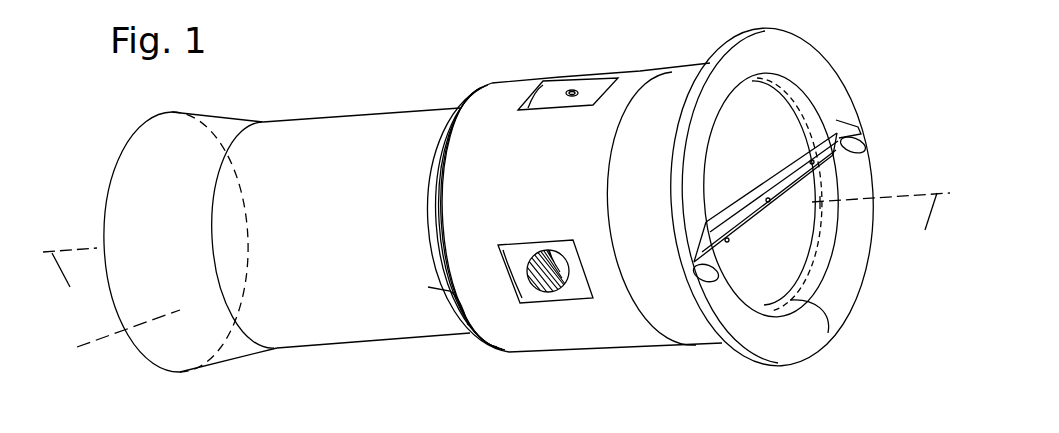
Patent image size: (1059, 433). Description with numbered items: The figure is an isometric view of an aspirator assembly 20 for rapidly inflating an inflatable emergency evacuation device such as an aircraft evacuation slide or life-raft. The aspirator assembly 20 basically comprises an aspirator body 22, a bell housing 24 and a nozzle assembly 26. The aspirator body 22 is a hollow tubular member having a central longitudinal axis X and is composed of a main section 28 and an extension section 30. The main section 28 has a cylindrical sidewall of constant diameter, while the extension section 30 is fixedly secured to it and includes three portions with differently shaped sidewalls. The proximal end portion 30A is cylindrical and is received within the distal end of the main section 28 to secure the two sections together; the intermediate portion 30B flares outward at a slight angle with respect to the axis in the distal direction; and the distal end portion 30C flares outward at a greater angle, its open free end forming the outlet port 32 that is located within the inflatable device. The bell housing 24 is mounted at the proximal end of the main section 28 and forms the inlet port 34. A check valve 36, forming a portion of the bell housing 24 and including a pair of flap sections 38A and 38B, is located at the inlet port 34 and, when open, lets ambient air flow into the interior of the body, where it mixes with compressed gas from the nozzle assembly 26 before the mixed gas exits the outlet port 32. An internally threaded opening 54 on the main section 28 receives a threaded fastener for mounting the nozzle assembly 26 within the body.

The aspirator assembly 20 is at (378, 58).
The aspirator body 22 is at (418, 107).
The bell housing 24 is at (817, 75).
The nozzle assembly 26 is at (548, 260).
The main section 28 is at (568, 337).
The extension section 30 is at (320, 160).
The proximal end portion 30A is at (468, 327).
The intermediate portion 30B is at (378, 325).
The distal end portion 30C is at (230, 345).
The outlet port 32 is at (114, 333).
The inlet port 34 is at (792, 300).
The check valve 36 is at (780, 210).
The flap section 38A is at (758, 133).
The flap section 38B is at (782, 238).
The internally threaded opening 54 is at (570, 88).